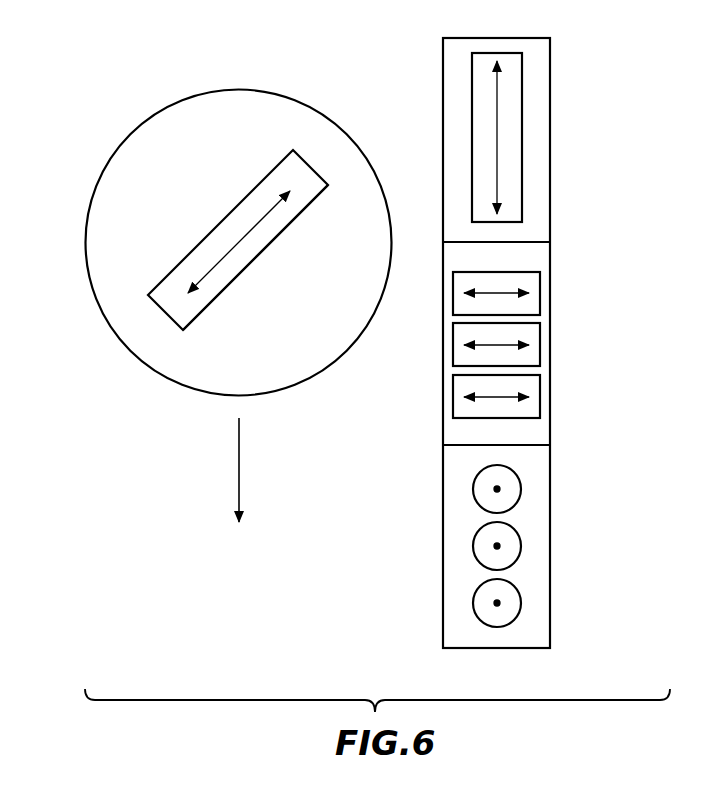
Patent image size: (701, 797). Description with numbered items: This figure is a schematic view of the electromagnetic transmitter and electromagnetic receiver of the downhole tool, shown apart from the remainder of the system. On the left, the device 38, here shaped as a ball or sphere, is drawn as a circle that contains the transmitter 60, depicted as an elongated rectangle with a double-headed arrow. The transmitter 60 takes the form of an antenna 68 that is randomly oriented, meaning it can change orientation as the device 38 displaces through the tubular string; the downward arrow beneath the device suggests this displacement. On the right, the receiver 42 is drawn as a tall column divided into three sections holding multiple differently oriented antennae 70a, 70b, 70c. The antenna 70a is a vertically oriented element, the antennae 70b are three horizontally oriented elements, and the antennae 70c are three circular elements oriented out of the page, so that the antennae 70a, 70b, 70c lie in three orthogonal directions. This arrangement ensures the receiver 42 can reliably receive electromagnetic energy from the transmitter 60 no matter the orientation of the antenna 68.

The device 38 is at (144, 116).
The transmitter 60 is at (196, 224).
The antenna 68 is at (256, 266).
The receiver 42 is at (553, 72).
The antenna 70a is at (522, 96).
The antenna 70b is at (540, 293).
The antenna 70c is at (518, 478).